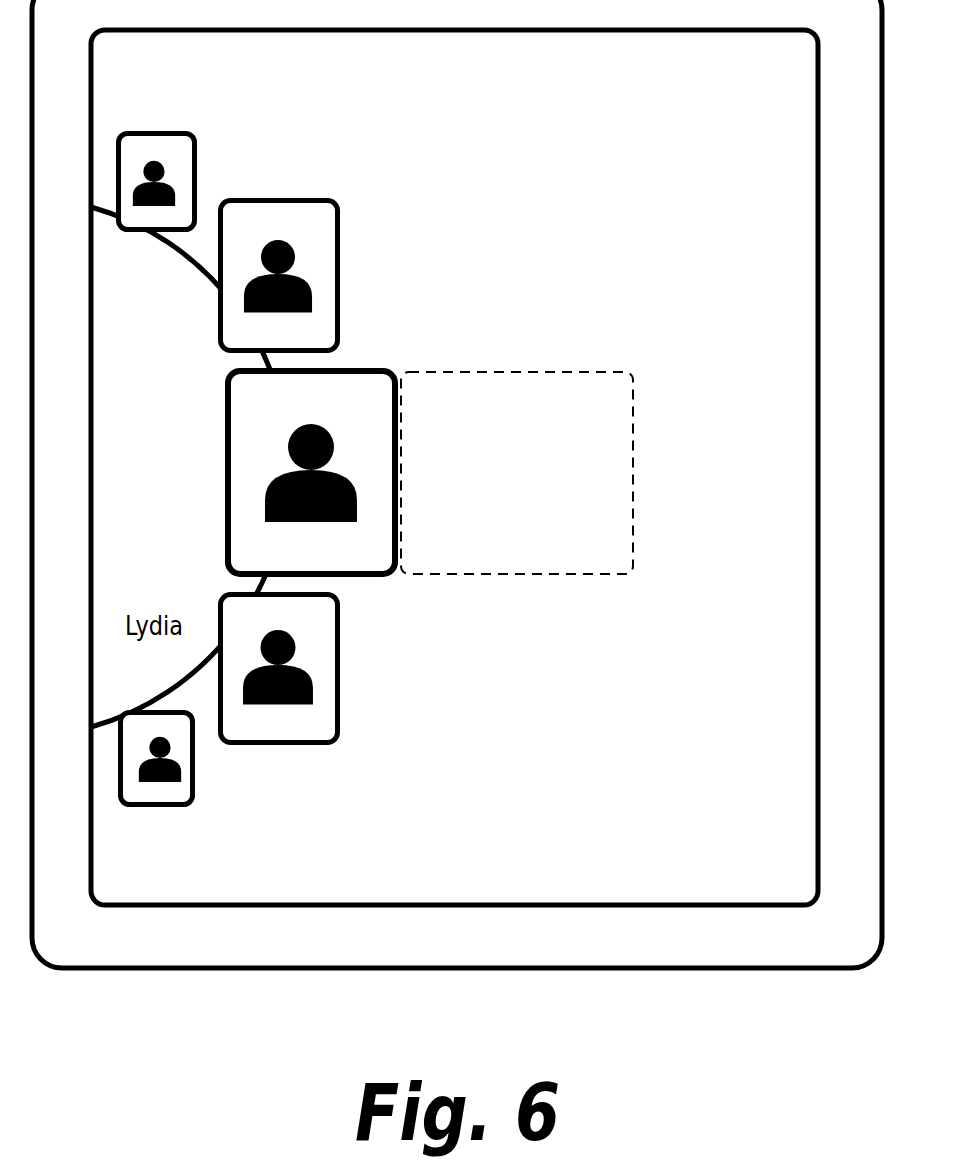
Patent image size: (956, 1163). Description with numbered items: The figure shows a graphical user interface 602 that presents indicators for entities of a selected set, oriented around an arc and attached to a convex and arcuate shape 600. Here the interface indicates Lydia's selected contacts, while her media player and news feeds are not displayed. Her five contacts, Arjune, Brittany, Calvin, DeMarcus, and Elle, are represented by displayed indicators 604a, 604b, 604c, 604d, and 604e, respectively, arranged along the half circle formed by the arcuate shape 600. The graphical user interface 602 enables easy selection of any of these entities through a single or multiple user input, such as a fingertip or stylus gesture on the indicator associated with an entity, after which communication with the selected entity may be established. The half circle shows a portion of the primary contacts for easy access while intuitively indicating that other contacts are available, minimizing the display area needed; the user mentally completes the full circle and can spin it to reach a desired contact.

The convex and arcuate shape 600 is at (175, 308).
The graphical user interface 602 is at (776, 94).
The indicator 604a is at (244, 151).
The indicator 604b is at (369, 244).
The indicator 604c is at (430, 432).
The indicator 604d is at (376, 697).
The indicator 604e is at (250, 789).